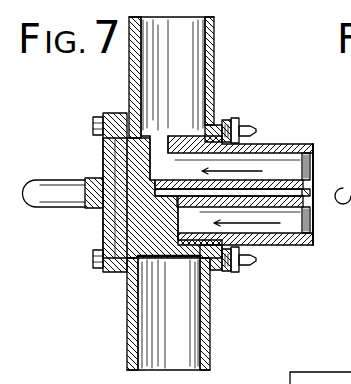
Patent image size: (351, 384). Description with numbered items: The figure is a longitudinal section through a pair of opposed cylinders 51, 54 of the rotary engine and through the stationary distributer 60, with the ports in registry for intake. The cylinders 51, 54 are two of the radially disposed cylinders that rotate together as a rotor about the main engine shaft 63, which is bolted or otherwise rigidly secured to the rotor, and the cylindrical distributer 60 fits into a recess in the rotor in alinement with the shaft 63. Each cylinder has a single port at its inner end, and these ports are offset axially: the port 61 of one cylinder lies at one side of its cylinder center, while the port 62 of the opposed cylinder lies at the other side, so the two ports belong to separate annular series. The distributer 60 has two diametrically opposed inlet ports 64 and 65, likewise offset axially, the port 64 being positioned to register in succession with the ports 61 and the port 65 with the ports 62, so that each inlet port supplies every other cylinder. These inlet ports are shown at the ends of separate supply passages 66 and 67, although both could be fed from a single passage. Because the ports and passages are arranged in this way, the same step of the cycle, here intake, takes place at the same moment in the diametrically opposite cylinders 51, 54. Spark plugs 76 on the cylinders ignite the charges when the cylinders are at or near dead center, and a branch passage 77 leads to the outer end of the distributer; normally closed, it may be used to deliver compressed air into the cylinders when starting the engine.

The cylinder 51 is at (238, 367).
The cylinder 54 is at (214, 43).
The distributer member 60 is at (297, 244).
The cylinder port 61 is at (158, 140).
The cylinder port 62 is at (184, 247).
The main engine shaft 63 is at (60, 194).
The inlet port 64 is at (162, 158).
The inlet port 65 is at (229, 213).
The supply passage 66 is at (273, 165).
The supply passage 67 is at (257, 239).
The spark plug 76 is at (238, 130).
The branch passage 77 is at (307, 192).